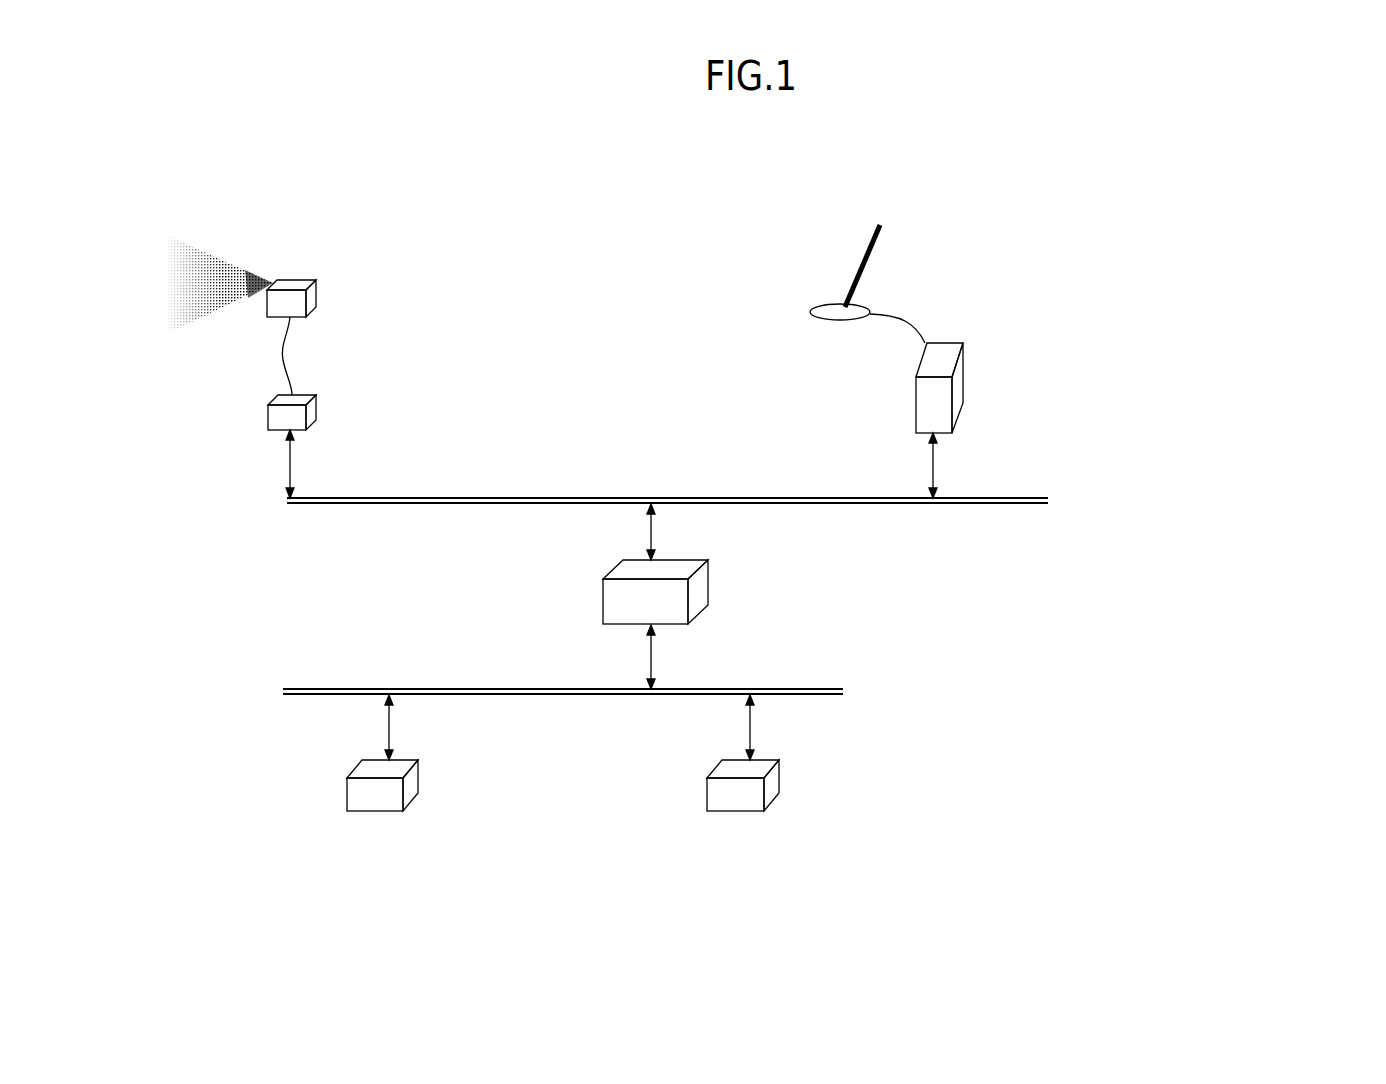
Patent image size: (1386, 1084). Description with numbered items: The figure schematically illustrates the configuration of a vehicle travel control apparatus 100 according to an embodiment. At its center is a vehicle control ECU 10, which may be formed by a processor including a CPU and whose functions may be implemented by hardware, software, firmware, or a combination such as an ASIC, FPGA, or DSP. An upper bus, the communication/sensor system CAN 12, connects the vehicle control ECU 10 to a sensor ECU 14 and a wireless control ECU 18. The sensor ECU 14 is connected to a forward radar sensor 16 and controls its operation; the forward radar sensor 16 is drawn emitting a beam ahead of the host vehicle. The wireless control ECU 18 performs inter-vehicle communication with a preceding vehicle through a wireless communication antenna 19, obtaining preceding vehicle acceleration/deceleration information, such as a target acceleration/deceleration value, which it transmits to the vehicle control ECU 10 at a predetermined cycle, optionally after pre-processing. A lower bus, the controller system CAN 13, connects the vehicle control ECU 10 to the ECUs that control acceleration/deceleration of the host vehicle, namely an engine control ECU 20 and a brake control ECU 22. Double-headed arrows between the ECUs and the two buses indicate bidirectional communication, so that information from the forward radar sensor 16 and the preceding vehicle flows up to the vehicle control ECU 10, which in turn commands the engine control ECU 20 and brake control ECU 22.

The vehicle travel control apparatus 100 is at (356, 164).
The vehicle control ECU 10 is at (708, 585).
The communication/sensor system CAN 12 is at (800, 504).
The controller system CAN 13 is at (795, 695).
The sensor ECU 14 is at (316, 406).
The forward radar sensor 16 is at (300, 280).
The wireless control ECU 18 is at (963, 370).
The wireless communication antenna 19 is at (872, 255).
The engine control ECU 20 is at (372, 812).
The brake control ECU 22 is at (735, 812).